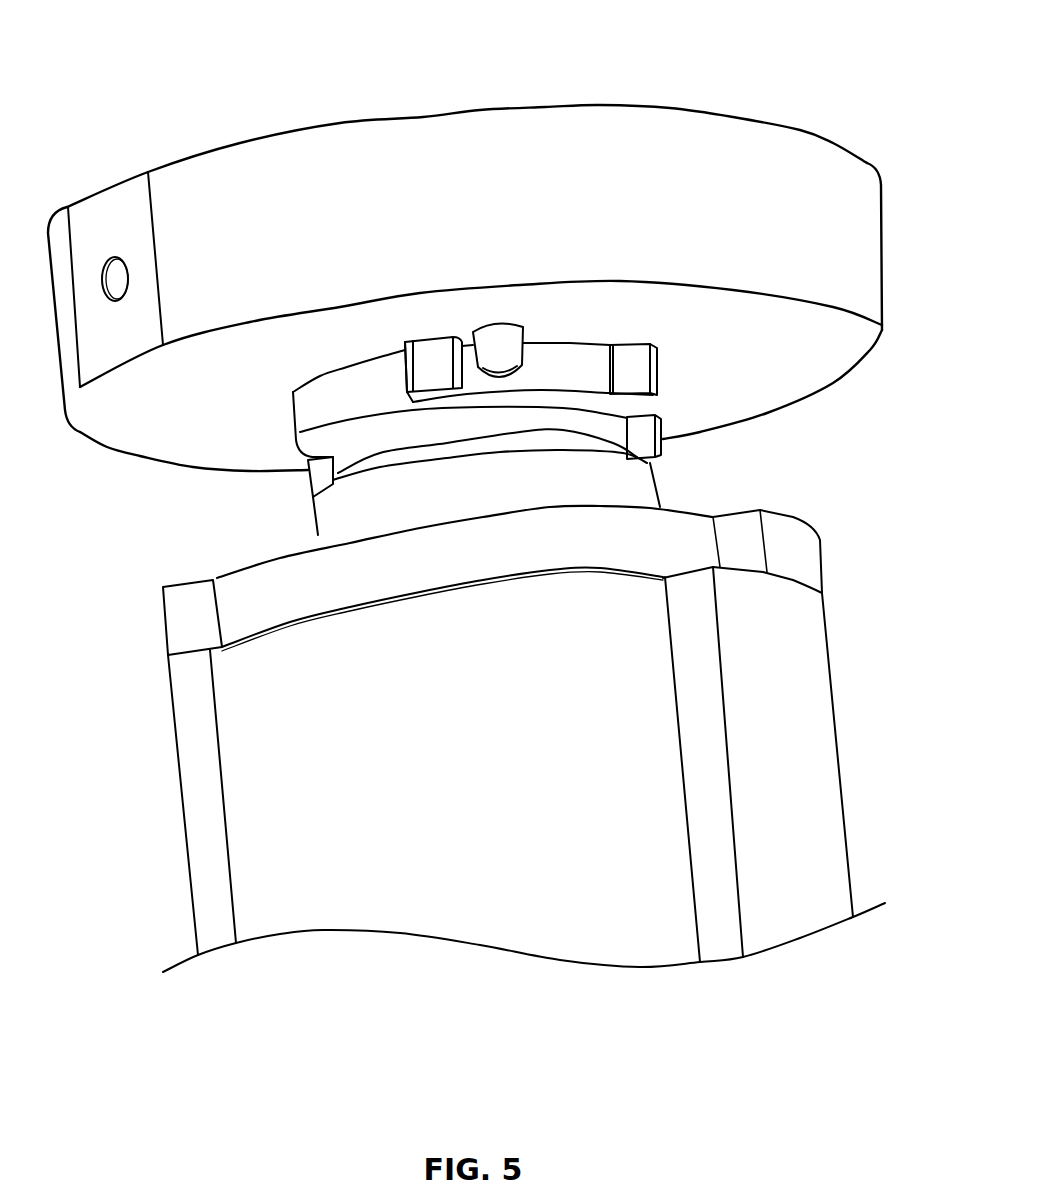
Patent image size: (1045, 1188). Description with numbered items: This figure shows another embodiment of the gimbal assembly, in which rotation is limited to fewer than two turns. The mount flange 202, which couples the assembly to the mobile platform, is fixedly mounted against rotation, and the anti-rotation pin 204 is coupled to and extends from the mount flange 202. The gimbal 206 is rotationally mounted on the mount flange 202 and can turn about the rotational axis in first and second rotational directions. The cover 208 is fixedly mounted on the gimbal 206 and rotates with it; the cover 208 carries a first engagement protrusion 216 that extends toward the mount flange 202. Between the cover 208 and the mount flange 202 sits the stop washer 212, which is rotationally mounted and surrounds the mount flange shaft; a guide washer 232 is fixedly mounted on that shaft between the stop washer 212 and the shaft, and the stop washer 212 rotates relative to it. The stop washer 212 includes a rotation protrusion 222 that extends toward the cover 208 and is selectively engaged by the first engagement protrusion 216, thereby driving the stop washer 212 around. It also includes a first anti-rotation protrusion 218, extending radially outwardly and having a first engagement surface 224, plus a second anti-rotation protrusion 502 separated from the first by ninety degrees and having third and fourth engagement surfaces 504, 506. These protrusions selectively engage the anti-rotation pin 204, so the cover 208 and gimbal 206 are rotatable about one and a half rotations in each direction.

The mount flange 202 is at (830, 152).
The anti-rotation pin 204 is at (497, 347).
The gimbal 206 is at (833, 692).
The cover 208 is at (316, 518).
The stop washer 212 is at (323, 403).
The first engagement protrusion 216 is at (308, 482).
The anti-rotation protrusion 218 is at (658, 372).
The rotation protrusion 222 is at (663, 448).
The first engagement surface 224 is at (628, 360).
The guide washer 232 is at (393, 432).
The second anti-rotation protrusion 502 is at (437, 365).
The third engagement surface 504 is at (400, 368).
The fourth engagement surface 506 is at (497, 332).